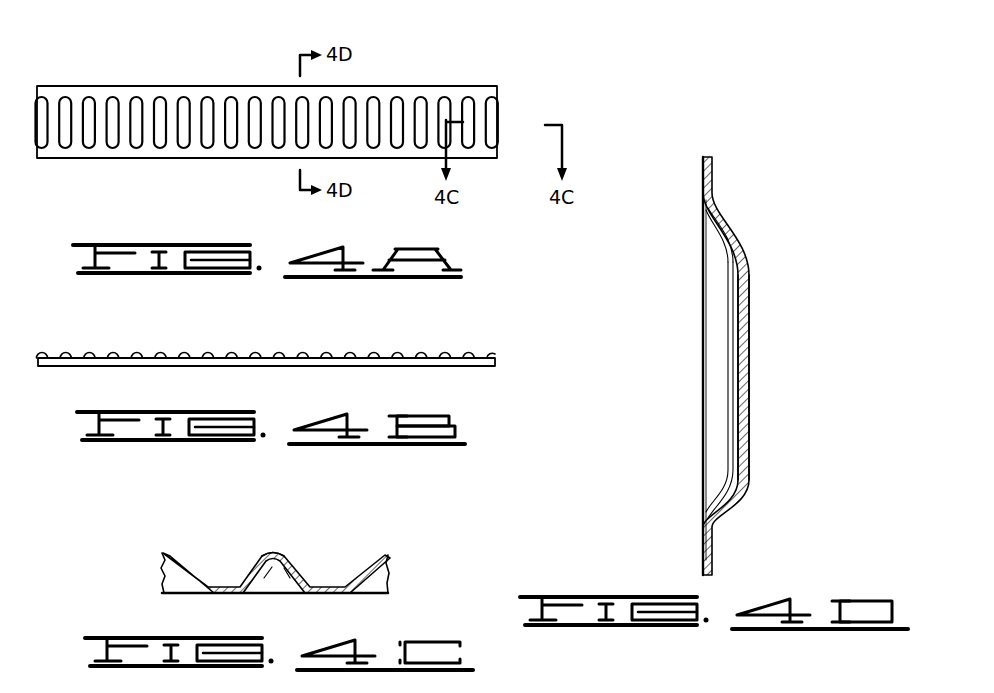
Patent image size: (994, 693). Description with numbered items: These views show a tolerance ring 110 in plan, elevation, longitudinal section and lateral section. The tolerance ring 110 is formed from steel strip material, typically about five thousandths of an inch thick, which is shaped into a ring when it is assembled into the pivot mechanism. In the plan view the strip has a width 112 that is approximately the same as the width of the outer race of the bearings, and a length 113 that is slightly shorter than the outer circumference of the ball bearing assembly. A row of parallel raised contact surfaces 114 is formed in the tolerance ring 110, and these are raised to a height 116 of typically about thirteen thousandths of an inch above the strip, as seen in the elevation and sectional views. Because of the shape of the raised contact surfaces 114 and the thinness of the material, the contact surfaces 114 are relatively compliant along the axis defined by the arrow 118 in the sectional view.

In FIG. 4A, the tolerance ring 110 is at (391, 69).
In FIG. 4B, the tolerance ring 110 is at (331, 348).
In FIG. 4C, the tolerance ring 110 is at (211, 557).
In FIG. 4D, the tolerance ring 110 is at (760, 232).
In FIG. 4A, the width 112 is at (530, 158).
In FIG. 4A, the length 113 is at (497, 216).
In FIG. 4A, the raised contact surfaces 114 is at (88, 100).
In FIG. 4B, the raised contact surfaces 114 is at (136, 353).
In FIG. 4C, the raised contact surfaces 114 is at (273, 552).
In FIG. 4D, the raised contact surfaces 114 is at (751, 330).
In FIG. 4B, the height 116 is at (535, 366).
In FIG. 4D, the height 116 is at (748, 172).
In FIG. 4C, the arrow 118 is at (416, 530).